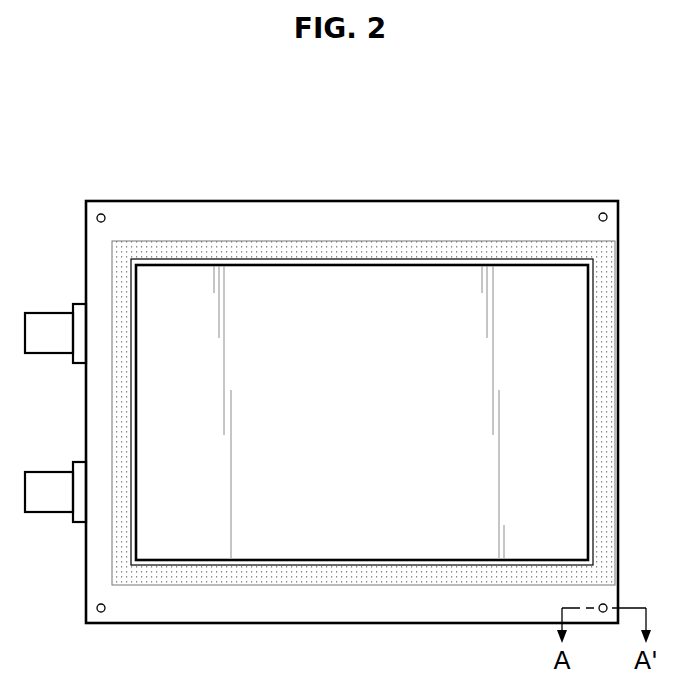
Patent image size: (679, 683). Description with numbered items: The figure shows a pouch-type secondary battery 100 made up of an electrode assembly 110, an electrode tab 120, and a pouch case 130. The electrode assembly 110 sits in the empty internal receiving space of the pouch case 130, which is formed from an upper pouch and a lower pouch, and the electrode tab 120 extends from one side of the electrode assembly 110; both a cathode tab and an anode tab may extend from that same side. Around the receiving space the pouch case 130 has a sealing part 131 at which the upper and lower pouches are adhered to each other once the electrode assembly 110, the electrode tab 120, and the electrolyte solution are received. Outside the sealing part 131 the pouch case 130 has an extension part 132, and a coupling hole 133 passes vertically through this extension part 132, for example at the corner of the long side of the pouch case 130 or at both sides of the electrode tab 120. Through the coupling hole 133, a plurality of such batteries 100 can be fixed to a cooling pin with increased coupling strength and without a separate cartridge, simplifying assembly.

The pouch-type secondary battery 100 is at (149, 157).
The electrode assembly 110 is at (251, 277).
The electrode tab 120 is at (42, 353).
The pouch case 130 is at (483, 161).
The sealing part 131 is at (489, 219).
The extension part 132 is at (542, 250).
The coupling hole 133 is at (603, 213).